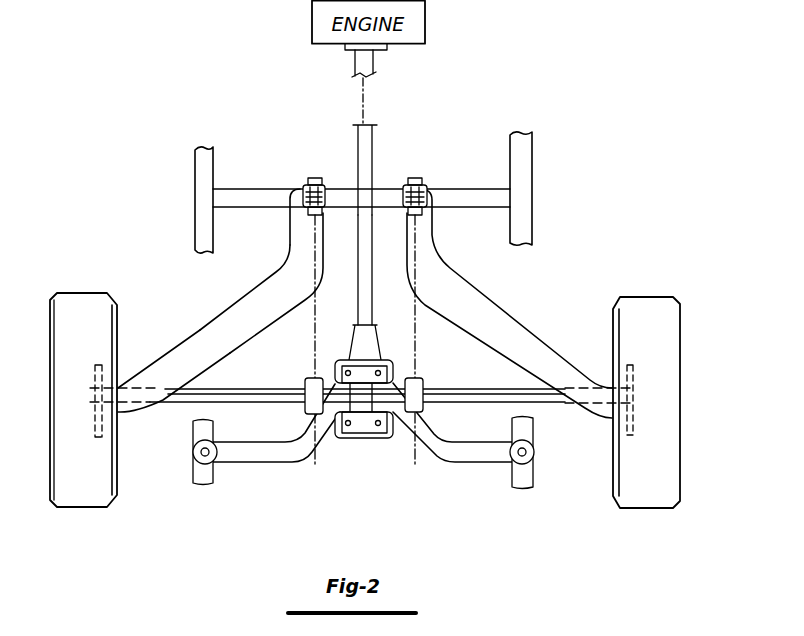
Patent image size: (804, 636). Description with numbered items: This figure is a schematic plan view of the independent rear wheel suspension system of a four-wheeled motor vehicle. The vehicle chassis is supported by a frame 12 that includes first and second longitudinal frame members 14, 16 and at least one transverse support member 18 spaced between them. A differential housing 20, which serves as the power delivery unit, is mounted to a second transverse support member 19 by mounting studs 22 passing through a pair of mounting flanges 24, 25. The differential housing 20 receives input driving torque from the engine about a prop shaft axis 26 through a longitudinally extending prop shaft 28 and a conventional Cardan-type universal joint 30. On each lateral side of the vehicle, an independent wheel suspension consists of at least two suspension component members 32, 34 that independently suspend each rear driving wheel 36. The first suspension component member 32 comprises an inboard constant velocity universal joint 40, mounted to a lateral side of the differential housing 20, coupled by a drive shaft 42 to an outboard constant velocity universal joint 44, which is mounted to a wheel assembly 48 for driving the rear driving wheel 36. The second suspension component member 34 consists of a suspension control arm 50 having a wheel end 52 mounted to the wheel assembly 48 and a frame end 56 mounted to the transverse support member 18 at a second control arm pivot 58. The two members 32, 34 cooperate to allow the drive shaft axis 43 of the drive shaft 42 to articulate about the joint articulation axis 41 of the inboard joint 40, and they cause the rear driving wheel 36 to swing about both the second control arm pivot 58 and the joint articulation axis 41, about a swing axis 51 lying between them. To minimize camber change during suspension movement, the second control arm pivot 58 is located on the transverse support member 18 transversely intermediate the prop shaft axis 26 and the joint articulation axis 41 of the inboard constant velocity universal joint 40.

The frame 12 is at (547, 194).
The first longitudinal frame member 14 is at (215, 163).
The second longitudinal frame member 16 is at (533, 152).
The transverse support member 18 is at (375, 188).
The second transverse support member 19 is at (468, 455).
The differential housing 20 is at (372, 410).
The mounting studs 22 is at (378, 366).
The mounting flange 24 is at (384, 369).
The mounting flange 25 is at (385, 437).
The prop shaft axis 26 is at (366, 80).
The prop shaft 28 is at (373, 272).
The Cardan-type universal joint 30 is at (357, 345).
The first suspension component member 32 is at (505, 312).
The second suspension component member 34 is at (220, 327).
The rear driving wheel 36 is at (105, 373).
The inboard constant velocity universal joint 40 is at (298, 415).
The joint articulation axis 41 is at (313, 397).
The drive shaft 42 is at (150, 410).
The drive shaft axis 43 is at (243, 388).
The outboard constant velocity universal joint 44 is at (604, 374).
The wheel assembly 48 is at (124, 319).
The suspension control arm 50 is at (261, 277).
The swing axis 51 is at (313, 340).
The wheel end 52 is at (121, 385).
The frame end 56 is at (290, 219).
The second control arm pivot 58 is at (323, 214).